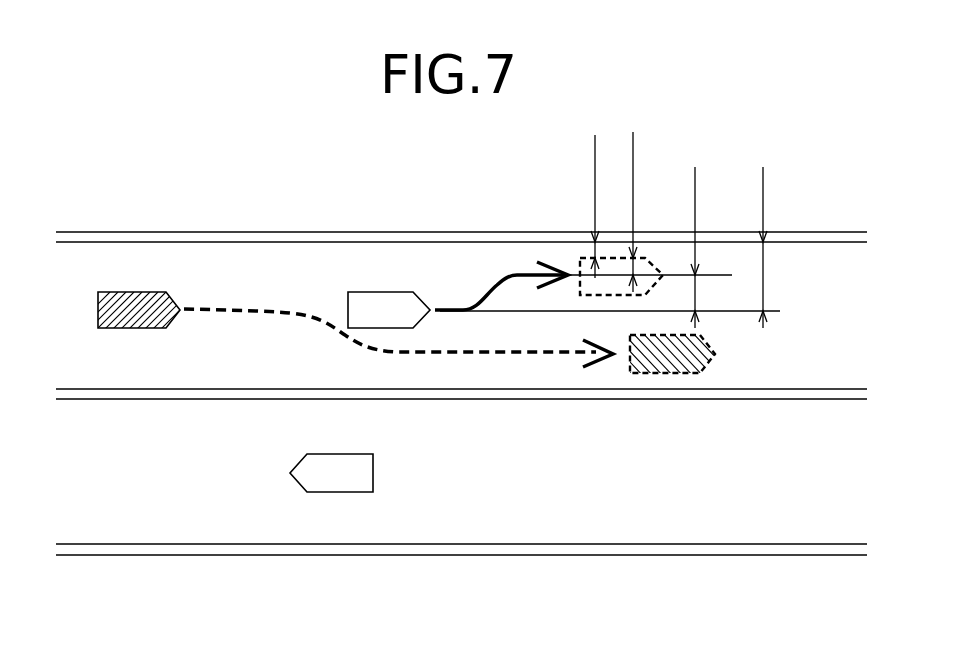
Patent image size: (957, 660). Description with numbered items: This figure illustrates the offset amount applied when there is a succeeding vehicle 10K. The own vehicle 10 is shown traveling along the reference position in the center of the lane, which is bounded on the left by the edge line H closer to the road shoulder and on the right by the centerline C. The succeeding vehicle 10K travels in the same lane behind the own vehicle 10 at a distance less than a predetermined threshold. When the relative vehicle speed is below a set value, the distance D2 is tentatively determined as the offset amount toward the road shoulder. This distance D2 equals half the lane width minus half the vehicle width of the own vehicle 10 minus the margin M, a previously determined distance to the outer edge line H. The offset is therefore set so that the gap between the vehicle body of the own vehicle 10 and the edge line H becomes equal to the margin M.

The own vehicle 10 is at (377, 292).
The succeeding vehicle 10K is at (135, 292).
The edge line H is at (468, 240).
The centerline C is at (461, 398).
The margin M is at (588, 206).
The offset amount D2 is at (708, 247).